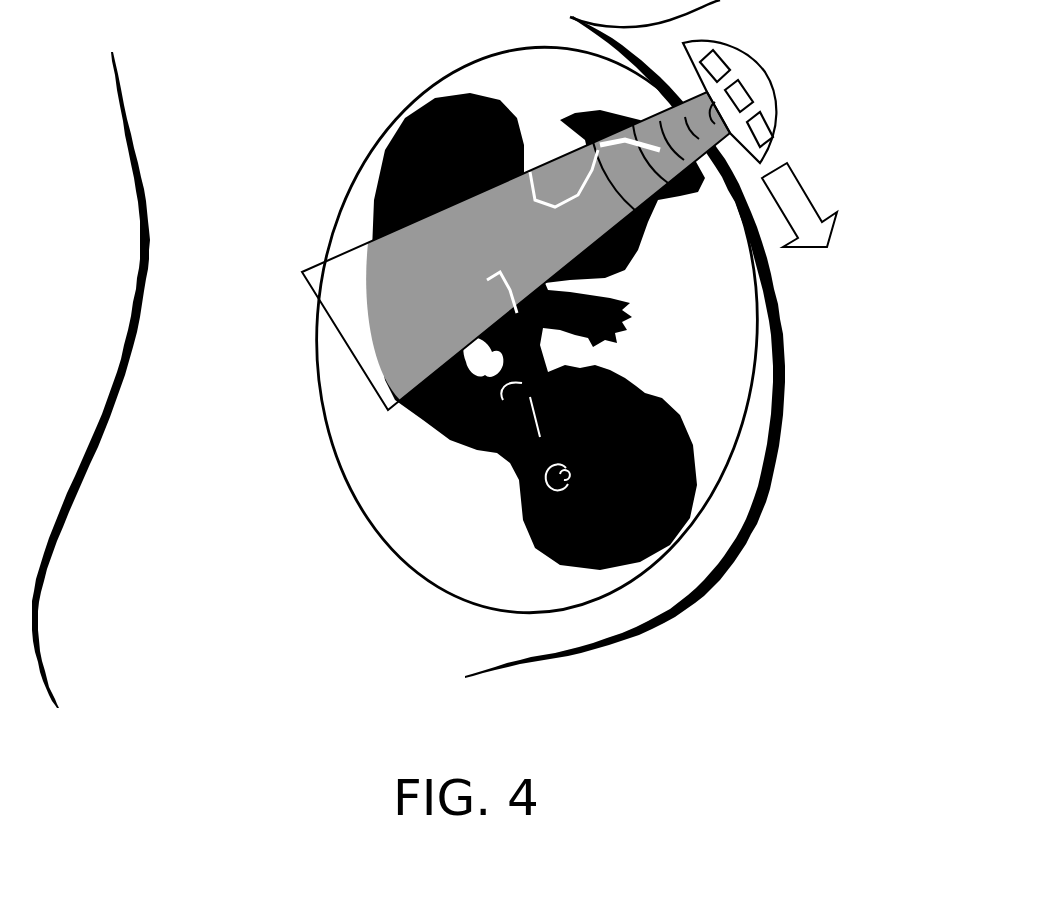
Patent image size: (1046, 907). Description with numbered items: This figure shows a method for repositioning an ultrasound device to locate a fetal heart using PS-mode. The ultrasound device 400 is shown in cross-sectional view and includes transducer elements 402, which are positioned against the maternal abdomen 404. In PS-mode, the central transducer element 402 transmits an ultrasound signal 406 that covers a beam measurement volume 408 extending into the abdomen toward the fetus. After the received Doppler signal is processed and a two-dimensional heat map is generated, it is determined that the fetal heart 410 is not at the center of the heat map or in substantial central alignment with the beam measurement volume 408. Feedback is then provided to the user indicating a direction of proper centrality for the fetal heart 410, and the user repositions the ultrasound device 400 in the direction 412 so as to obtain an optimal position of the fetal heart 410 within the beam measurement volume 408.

The ultrasound device 400 is at (730, 55).
The transducer elements 402 is at (753, 97).
The maternal abdomen 404 is at (737, 533).
The ultrasound signal 406 is at (698, 190).
The beam measurement volume 408 is at (622, 210).
The fetal heart 410 is at (470, 375).
The direction 412 is at (803, 183).